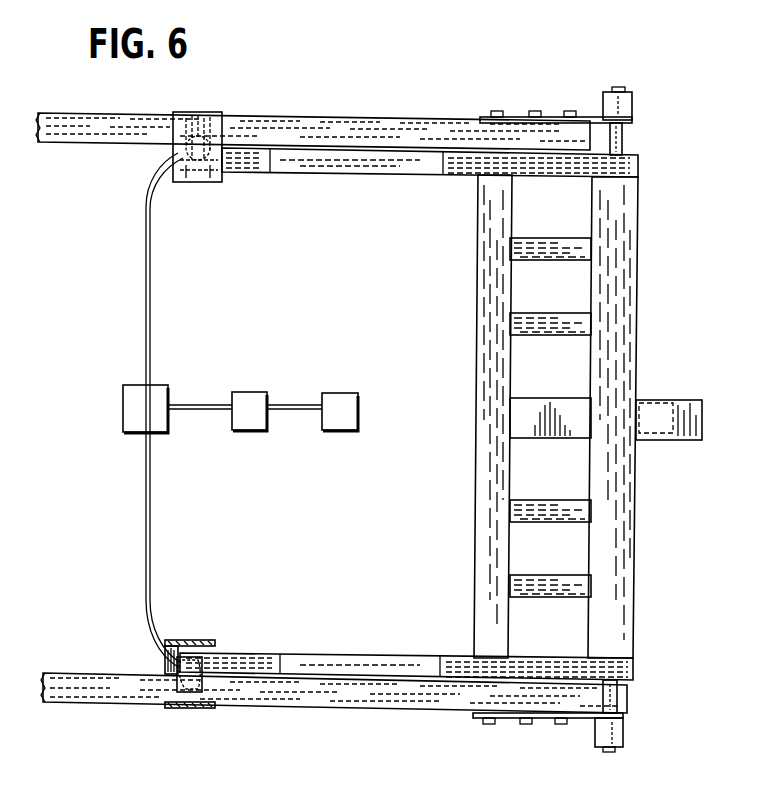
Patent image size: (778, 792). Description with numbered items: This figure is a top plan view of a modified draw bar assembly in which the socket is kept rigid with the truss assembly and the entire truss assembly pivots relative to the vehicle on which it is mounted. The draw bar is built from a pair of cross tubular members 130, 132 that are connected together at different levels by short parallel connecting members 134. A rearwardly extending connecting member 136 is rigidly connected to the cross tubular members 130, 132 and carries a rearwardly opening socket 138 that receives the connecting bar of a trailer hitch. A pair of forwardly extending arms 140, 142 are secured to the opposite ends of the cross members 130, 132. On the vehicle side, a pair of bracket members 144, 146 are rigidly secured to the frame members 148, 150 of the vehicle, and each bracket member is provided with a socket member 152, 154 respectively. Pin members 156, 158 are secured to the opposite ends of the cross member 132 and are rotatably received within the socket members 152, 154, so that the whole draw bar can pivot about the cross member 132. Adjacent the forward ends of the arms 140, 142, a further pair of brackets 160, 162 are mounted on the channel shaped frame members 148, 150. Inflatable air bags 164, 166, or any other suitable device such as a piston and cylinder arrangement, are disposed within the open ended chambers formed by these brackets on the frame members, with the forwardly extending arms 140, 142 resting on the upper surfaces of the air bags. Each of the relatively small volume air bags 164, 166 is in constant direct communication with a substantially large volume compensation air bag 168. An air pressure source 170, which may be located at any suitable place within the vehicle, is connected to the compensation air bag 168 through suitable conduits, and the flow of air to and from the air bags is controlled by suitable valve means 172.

The cross tubular member 130 is at (483, 307).
The cross tubular member 132 is at (630, 295).
The connecting members 134 is at (548, 251).
The rearwardly extending connecting member 136 is at (560, 413).
The socket 138 is at (665, 441).
The forwardly extending arm 140 is at (367, 661).
The forwardly extending arm 142 is at (375, 165).
The bracket member 144 is at (503, 719).
The bracket member 146 is at (512, 116).
The frame member 148 is at (362, 704).
The frame member 150 is at (352, 126).
The socket member 152 is at (620, 732).
The socket member 154 is at (625, 110).
The pin member 156 is at (613, 698).
The pin member 158 is at (622, 143).
The bracket 160 is at (205, 640).
The bracket 162 is at (217, 184).
The inflatable air bag 164 is at (170, 667).
The inflatable air bag 166 is at (176, 149).
The compensation air bag 168 is at (158, 388).
The air pressure source 170 is at (345, 398).
The valve means 172 is at (245, 421).